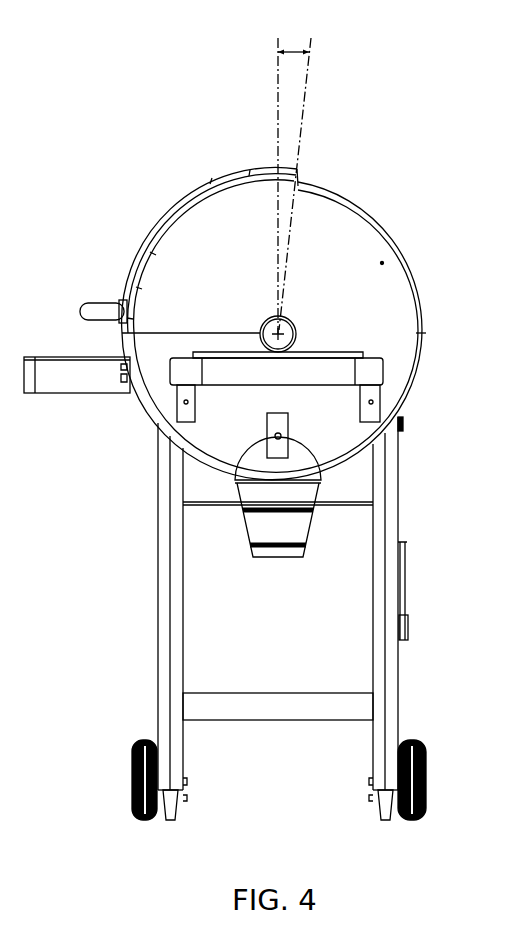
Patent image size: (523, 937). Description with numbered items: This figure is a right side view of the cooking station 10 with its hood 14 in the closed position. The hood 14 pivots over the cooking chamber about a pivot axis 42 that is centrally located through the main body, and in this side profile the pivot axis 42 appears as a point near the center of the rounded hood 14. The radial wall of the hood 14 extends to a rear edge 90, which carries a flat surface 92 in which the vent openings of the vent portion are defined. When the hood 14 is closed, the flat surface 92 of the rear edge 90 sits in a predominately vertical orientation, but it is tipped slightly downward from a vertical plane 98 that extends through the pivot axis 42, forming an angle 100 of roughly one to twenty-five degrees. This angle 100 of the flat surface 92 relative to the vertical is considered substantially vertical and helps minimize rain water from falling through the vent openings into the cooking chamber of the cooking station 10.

The cooking station 10 is at (405, 145).
The hood 14 is at (210, 178).
The pivot axis 42 is at (283, 326).
The rear edge 90 is at (300, 186).
The flat surface 92 is at (298, 172).
The vertical plane 98 is at (278, 81).
The angle 100 is at (297, 50).